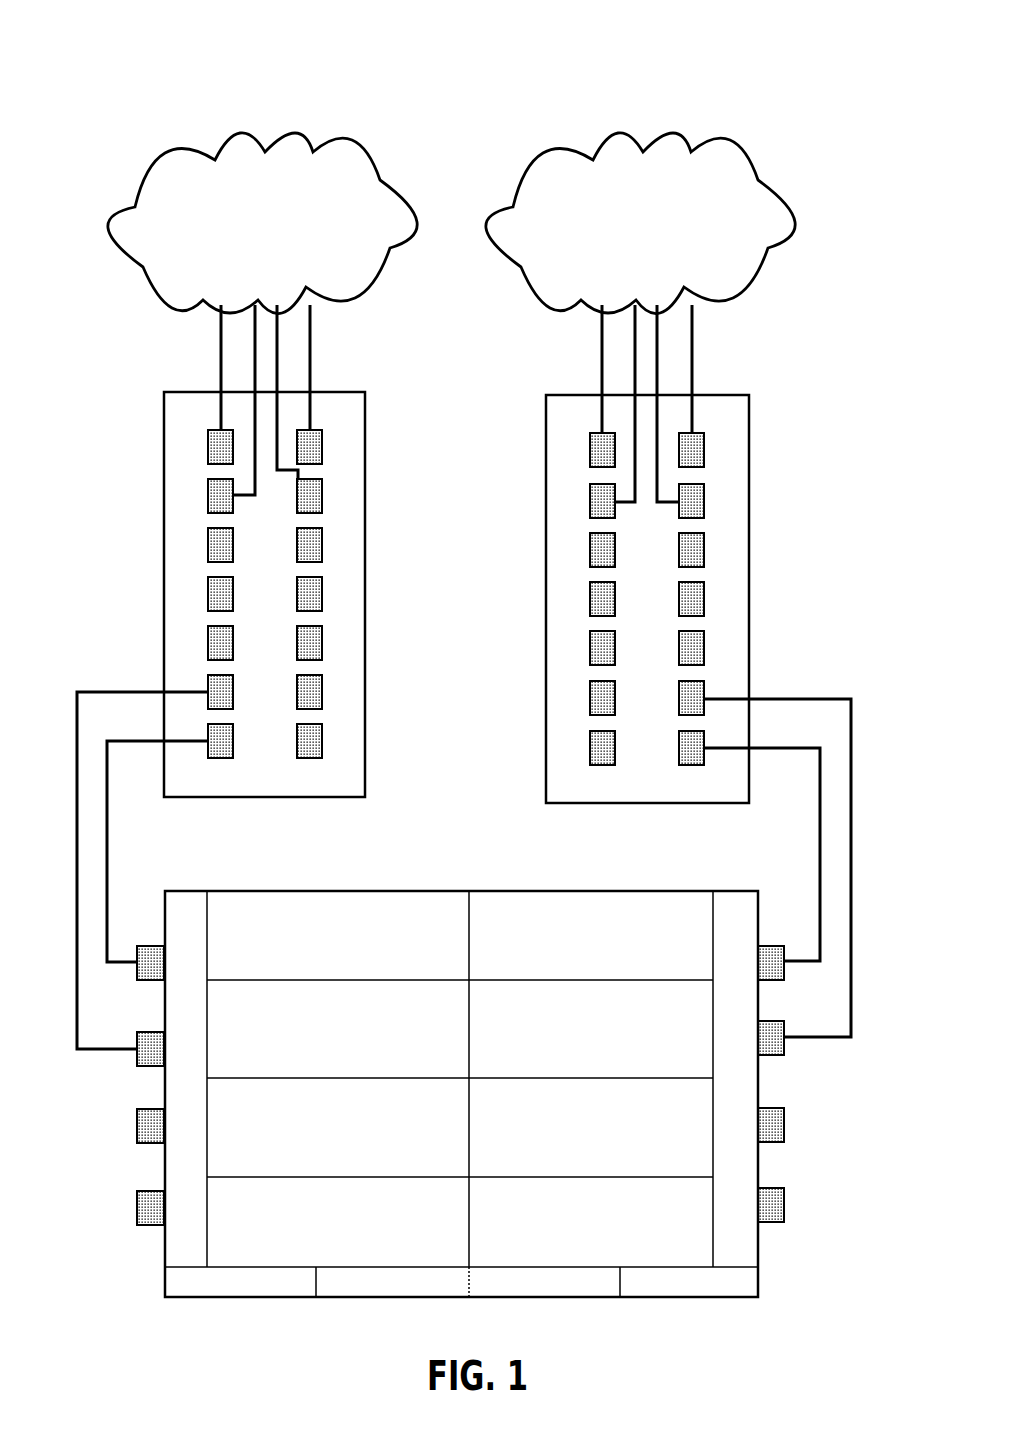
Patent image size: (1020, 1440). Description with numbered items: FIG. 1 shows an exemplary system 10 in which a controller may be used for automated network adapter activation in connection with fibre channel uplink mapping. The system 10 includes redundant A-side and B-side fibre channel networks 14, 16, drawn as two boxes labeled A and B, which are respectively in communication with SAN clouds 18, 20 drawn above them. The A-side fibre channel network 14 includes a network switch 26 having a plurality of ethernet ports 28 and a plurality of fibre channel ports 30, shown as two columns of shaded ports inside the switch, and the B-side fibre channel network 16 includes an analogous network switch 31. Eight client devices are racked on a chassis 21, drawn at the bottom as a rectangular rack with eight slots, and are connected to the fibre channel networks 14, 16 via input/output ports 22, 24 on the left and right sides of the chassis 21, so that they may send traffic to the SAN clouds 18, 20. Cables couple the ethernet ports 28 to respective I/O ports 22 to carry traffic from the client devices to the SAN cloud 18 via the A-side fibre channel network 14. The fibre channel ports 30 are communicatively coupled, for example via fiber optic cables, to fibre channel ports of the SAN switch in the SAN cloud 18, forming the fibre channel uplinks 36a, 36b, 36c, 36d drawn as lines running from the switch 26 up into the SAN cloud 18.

The system 10 is at (170, 110).
The SAN cloud 18 is at (282, 122).
The SAN cloud 20 is at (676, 112).
The A-side fibre channel network 14 is at (289, 348).
The B-side fibre channel network 16 is at (785, 307).
The fibre channel uplink 36a is at (215, 377).
The fibre channel uplink 36b is at (248, 353).
The fibre channel uplink 36c is at (325, 372).
The fibre channel uplink 36d is at (283, 347).
The network switch 26 is at (257, 628).
The network switch 31 is at (538, 809).
The fibre channel ports 30 is at (207, 496).
The ethernet ports 28 is at (322, 593).
The chassis 21 is at (473, 1132).
The input/output port 22 is at (137, 1217).
The input/output port 24 is at (784, 1200).